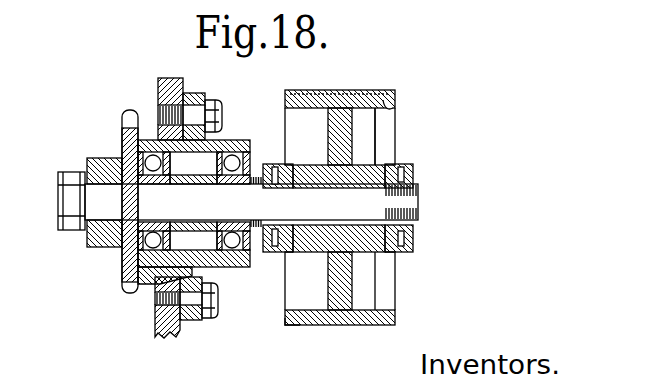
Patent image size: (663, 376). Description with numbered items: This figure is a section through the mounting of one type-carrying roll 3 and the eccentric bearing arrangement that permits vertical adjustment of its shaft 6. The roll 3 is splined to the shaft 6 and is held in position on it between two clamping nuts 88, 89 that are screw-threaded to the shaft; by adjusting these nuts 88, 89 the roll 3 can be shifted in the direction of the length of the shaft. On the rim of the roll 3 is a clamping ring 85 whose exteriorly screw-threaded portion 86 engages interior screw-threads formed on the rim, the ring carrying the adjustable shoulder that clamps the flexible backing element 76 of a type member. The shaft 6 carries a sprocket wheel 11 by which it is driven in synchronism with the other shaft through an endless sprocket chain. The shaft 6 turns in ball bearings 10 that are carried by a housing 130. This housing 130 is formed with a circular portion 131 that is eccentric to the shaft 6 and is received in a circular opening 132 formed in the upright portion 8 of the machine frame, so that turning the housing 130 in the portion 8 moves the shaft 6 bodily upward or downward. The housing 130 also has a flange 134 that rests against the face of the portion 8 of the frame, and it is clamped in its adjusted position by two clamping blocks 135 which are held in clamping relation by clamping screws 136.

The type-carrying roll 3 is at (282, 320).
The shaft 6 is at (366, 203).
The upright portion of the machine frame 8 is at (155, 332).
The ball bearings 10 is at (150, 233).
The sprocket wheel 11 is at (118, 255).
The backing element 76 is at (332, 84).
The clamping ring 85 is at (389, 125).
The exteriorly screw-threaded portion 86 is at (386, 112).
The clamping nut 88 is at (283, 160).
The clamping nut 89 is at (412, 167).
The housing 130 is at (127, 288).
The circular portion 131 is at (160, 276).
The circular opening 132 is at (163, 133).
The flange 134 is at (192, 270).
The clamping blocks 135 is at (190, 96).
The clamping screws 136 is at (215, 104).